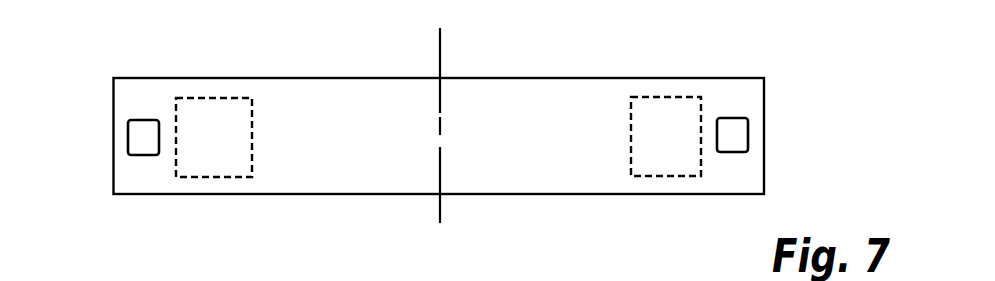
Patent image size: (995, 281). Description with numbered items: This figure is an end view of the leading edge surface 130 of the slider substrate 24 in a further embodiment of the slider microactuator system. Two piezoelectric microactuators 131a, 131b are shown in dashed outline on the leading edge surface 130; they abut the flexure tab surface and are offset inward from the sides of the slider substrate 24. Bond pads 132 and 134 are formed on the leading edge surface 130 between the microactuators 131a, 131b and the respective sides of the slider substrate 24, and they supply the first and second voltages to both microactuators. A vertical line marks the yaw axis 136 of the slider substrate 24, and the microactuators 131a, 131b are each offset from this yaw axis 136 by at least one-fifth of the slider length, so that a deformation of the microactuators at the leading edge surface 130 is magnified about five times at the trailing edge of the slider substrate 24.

The slider substrate 24 is at (691, 194).
The leading edge surface 130 is at (396, 142).
The piezoelectric microactuator 131a is at (673, 97).
The piezoelectric microactuator 131b is at (226, 98).
The bond pad 132 is at (748, 128).
The bond pad 134 is at (128, 133).
The yaw axis 136 is at (440, 43).